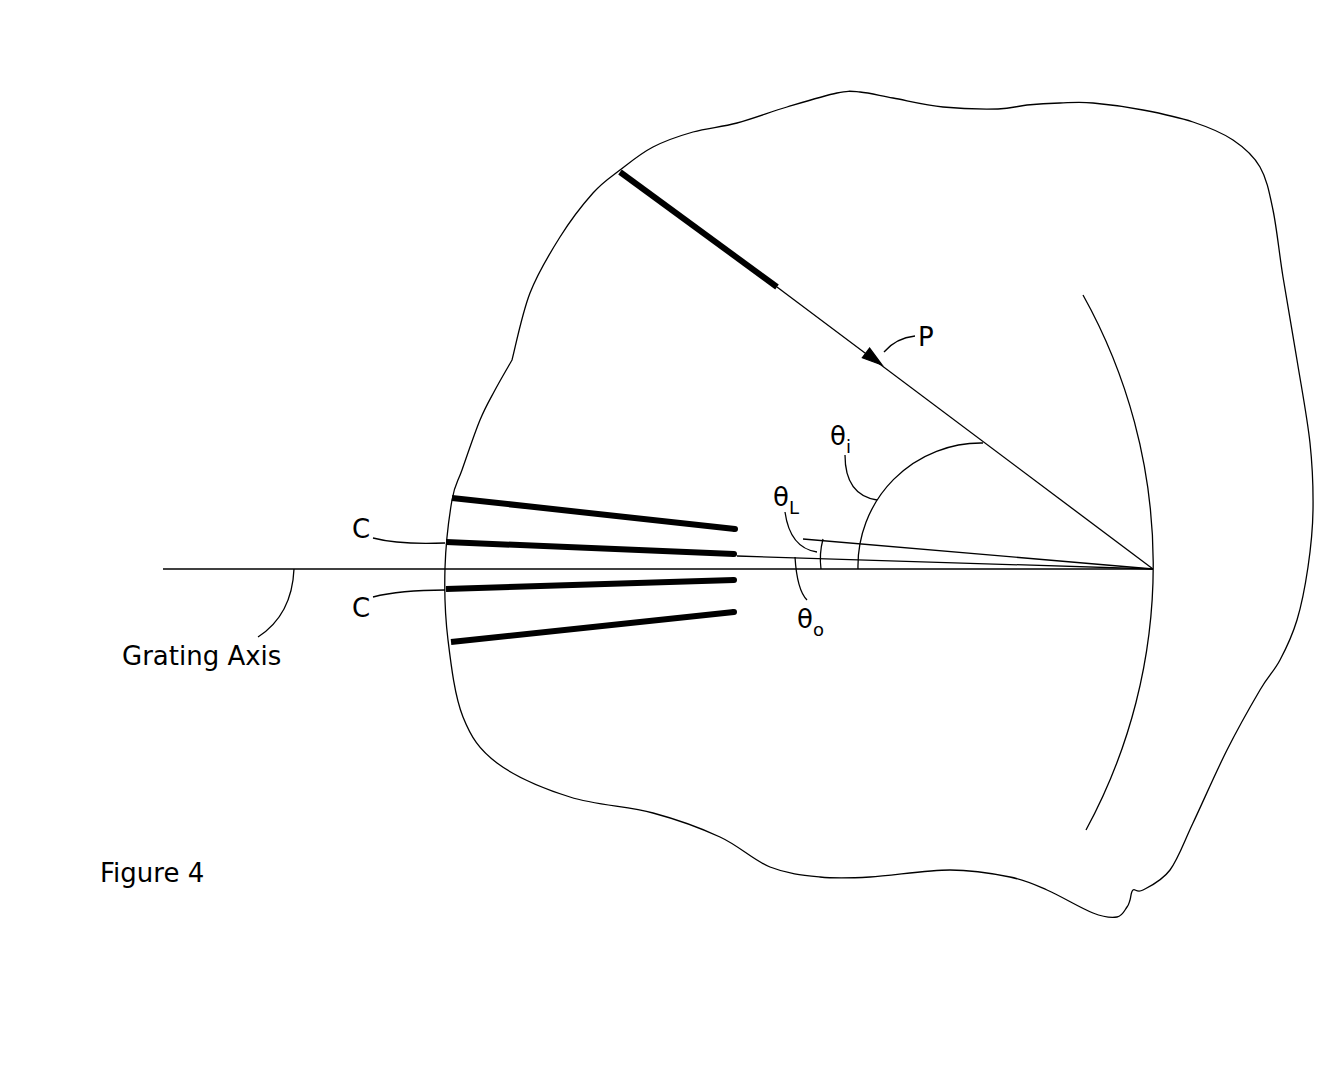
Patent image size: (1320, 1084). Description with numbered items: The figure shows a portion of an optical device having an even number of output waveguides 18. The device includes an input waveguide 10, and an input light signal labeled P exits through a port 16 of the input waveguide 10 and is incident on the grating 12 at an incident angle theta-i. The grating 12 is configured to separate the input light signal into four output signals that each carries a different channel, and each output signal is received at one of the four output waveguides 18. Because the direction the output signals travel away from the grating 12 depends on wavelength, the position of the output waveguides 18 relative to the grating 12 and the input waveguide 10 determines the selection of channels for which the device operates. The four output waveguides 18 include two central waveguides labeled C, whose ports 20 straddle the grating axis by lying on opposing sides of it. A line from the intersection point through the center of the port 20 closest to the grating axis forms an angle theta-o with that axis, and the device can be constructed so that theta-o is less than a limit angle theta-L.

The input waveguide 10 is at (730, 247).
The grating 12 is at (1100, 320).
The port 16 is at (778, 287).
The output waveguides 18 is at (647, 513).
The ports 20 is at (738, 527).